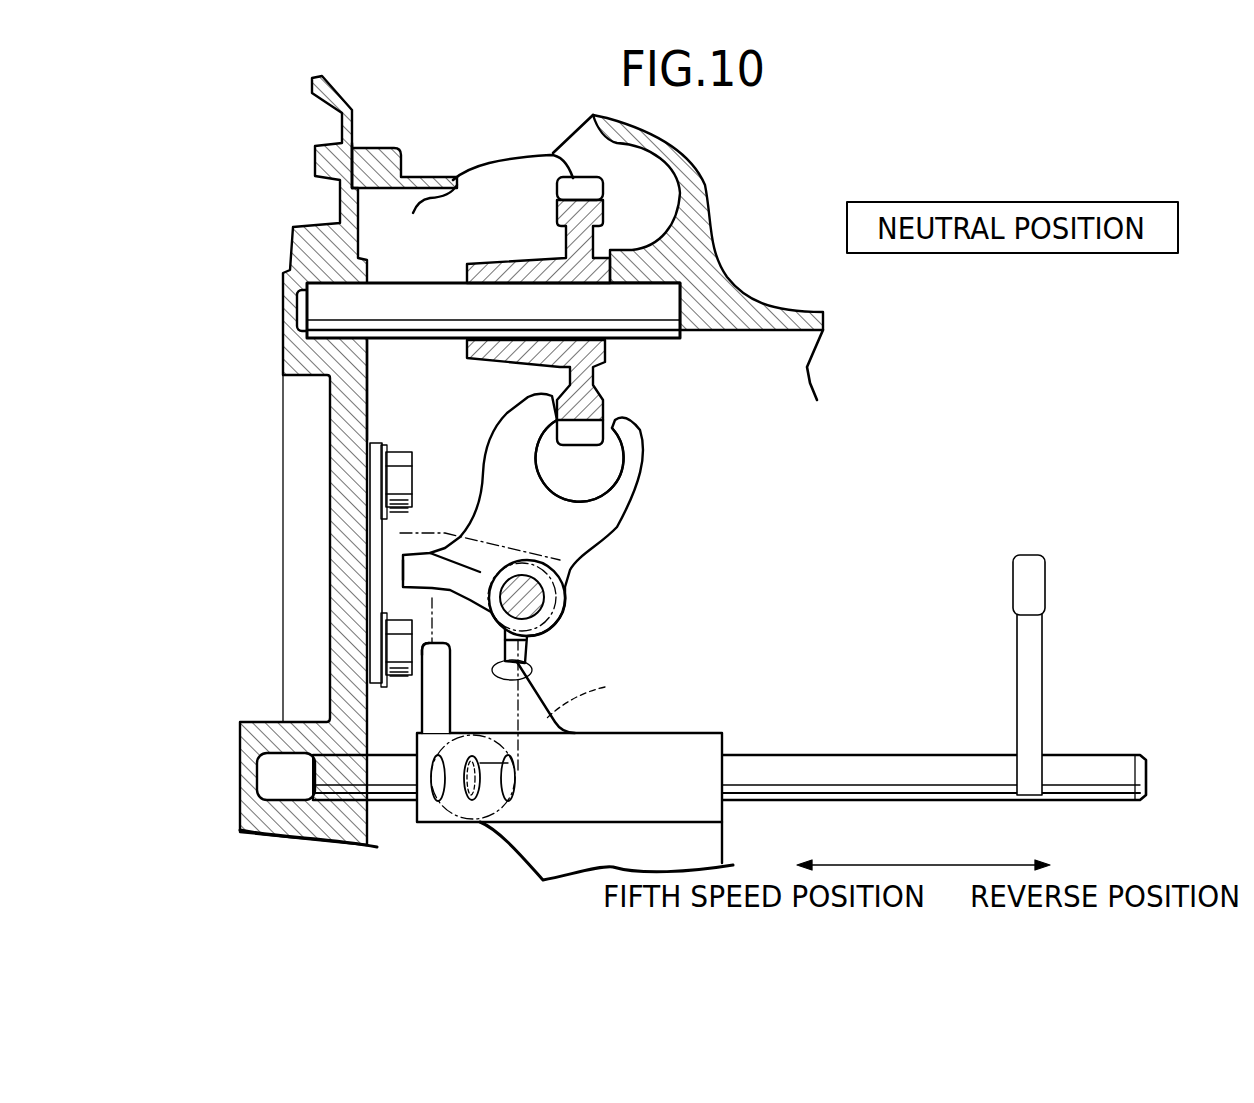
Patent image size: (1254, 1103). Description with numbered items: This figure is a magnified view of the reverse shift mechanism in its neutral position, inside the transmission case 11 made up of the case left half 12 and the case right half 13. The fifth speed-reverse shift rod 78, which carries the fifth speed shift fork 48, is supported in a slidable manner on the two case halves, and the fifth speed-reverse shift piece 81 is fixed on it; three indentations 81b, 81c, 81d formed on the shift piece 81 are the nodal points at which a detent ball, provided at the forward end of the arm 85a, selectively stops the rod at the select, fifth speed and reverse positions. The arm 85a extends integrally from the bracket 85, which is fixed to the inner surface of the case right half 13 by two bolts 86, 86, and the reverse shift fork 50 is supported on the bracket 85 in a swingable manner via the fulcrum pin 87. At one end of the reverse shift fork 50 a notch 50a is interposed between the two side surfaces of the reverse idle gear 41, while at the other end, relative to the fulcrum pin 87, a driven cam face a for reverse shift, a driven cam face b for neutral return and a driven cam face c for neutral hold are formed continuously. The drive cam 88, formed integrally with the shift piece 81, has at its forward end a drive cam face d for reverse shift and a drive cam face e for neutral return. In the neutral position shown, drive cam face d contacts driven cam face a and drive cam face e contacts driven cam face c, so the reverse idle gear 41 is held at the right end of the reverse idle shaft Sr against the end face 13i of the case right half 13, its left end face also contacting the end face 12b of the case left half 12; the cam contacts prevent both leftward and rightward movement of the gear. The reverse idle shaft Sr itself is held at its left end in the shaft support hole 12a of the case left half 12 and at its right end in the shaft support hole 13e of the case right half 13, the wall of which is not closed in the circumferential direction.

The transmission case 11 is at (213, 132).
The case left half 12 is at (333, 461).
The shaft support hole 12a is at (287, 317).
The end face 12b is at (367, 350).
The case right half 13 is at (515, 482).
The shaft support hole 13e is at (657, 292).
The end face 13i is at (580, 273).
The reverse idle gear 41 is at (578, 190).
The reverse idle shaft Sr is at (390, 293).
The reverse shift fork 50 is at (525, 534).
The notch 50a is at (560, 432).
The fulcrum pin 87 is at (533, 600).
The bracket 85 is at (378, 436).
The arm 85a is at (593, 705).
The bolt 86 is at (413, 483).
The drive cam 88 is at (430, 699).
The fifth speed-reverse shift piece 81 is at (578, 761).
The indentation 81b is at (510, 763).
The indentation 81c is at (440, 795).
The indentation 81d is at (510, 793).
The fifth speed-reverse shift rod 78 is at (837, 767).
The fifth speed shift fork 48 is at (1013, 585).
The driven cam face for reverse shift a is at (507, 673).
The driven cam face for neutral return b is at (480, 570).
The driven cam face for neutral hold c is at (432, 643).
The drive cam face for reverse shift d is at (513, 640).
The drive cam face for neutral return e is at (433, 567).